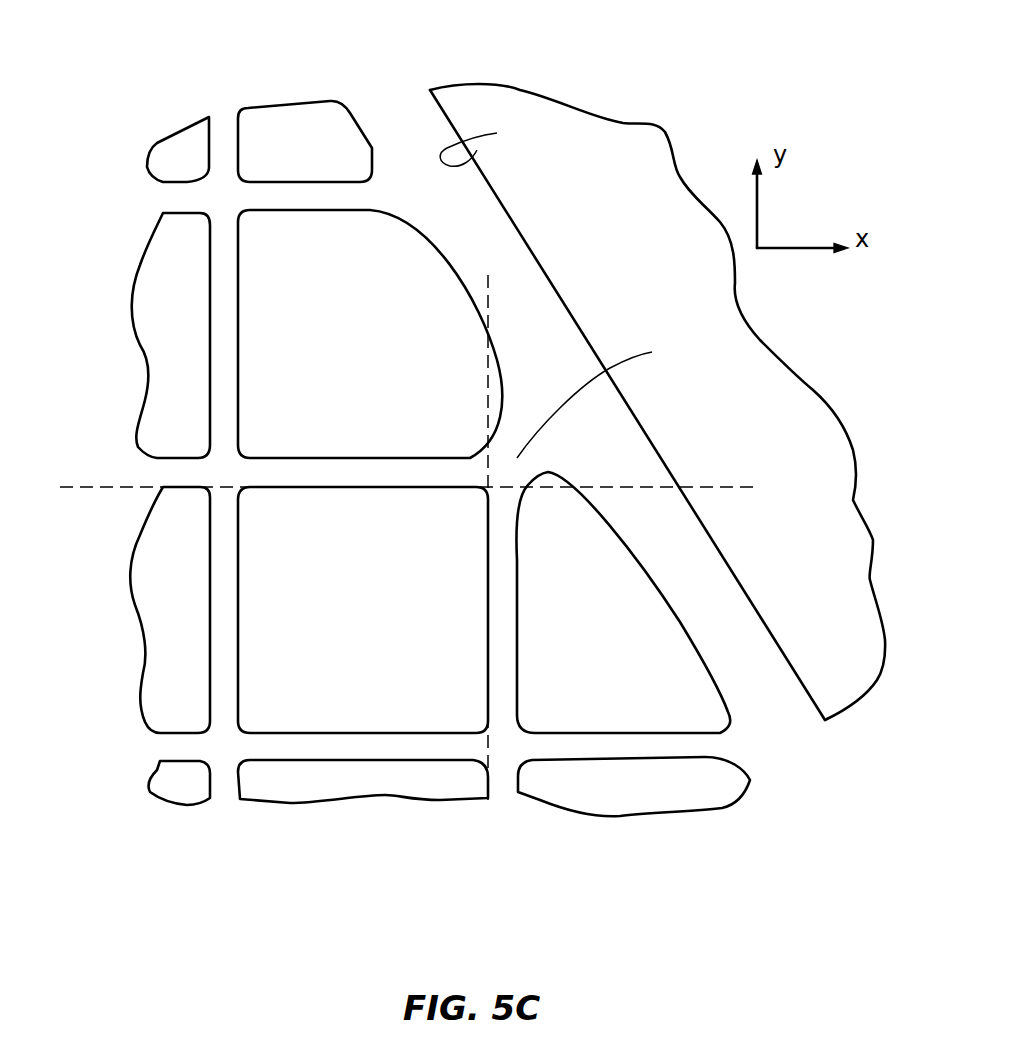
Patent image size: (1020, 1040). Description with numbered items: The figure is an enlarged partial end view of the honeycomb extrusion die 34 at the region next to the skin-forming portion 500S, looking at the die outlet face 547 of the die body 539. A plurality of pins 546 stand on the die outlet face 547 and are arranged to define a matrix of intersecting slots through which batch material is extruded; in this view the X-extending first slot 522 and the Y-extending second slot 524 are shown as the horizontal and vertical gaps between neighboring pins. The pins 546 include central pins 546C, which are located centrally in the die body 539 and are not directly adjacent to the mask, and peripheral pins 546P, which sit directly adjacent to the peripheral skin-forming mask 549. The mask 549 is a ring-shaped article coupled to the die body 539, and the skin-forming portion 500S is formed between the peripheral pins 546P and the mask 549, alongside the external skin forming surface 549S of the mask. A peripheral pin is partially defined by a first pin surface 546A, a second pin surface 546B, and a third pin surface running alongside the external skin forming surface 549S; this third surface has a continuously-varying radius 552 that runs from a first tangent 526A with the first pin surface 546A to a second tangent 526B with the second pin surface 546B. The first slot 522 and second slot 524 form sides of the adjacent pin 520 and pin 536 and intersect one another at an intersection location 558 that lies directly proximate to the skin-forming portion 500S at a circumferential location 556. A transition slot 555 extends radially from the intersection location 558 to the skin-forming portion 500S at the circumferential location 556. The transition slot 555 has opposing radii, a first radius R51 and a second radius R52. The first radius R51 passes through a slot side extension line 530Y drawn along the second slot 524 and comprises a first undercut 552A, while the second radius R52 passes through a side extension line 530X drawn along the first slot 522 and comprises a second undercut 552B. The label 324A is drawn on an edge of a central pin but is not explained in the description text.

The honeycomb extrusion die 34 is at (265, 75).
The skin-forming portion 500S is at (393, 86).
The die body 539 is at (688, 117).
The peripheral skin-forming mask 549 is at (651, 240).
The external skin forming surface 549S is at (501, 141).
The pin 520 is at (447, 237).
The first slot 522 is at (137, 199).
The second slot 524 is at (226, 820).
The pins 546 is at (225, 361).
The first pin surface 546A is at (307, 211).
The second pin surface 546B is at (341, 457).
The central pins 546C is at (202, 311).
The peripheral pins 546P is at (332, 157).
The first tangent 526A is at (372, 211).
The second tangent 526B is at (460, 457).
The side extension line 530X is at (715, 487).
The slot side extension line 530Y is at (490, 312).
The continuously-varying radius 552 is at (460, 320).
The first undercut 552A is at (497, 405).
The second undercut 552B is at (527, 487).
The first radius R51 is at (478, 424).
The second radius R52 is at (551, 488).
The transition slot 555 is at (610, 395).
The circumferential location 556 is at (570, 429).
The intersection location 558 is at (475, 499).
The pin 536 is at (710, 643).
The edge portion 324A is at (487, 673).
The die outlet face 547 is at (318, 820).